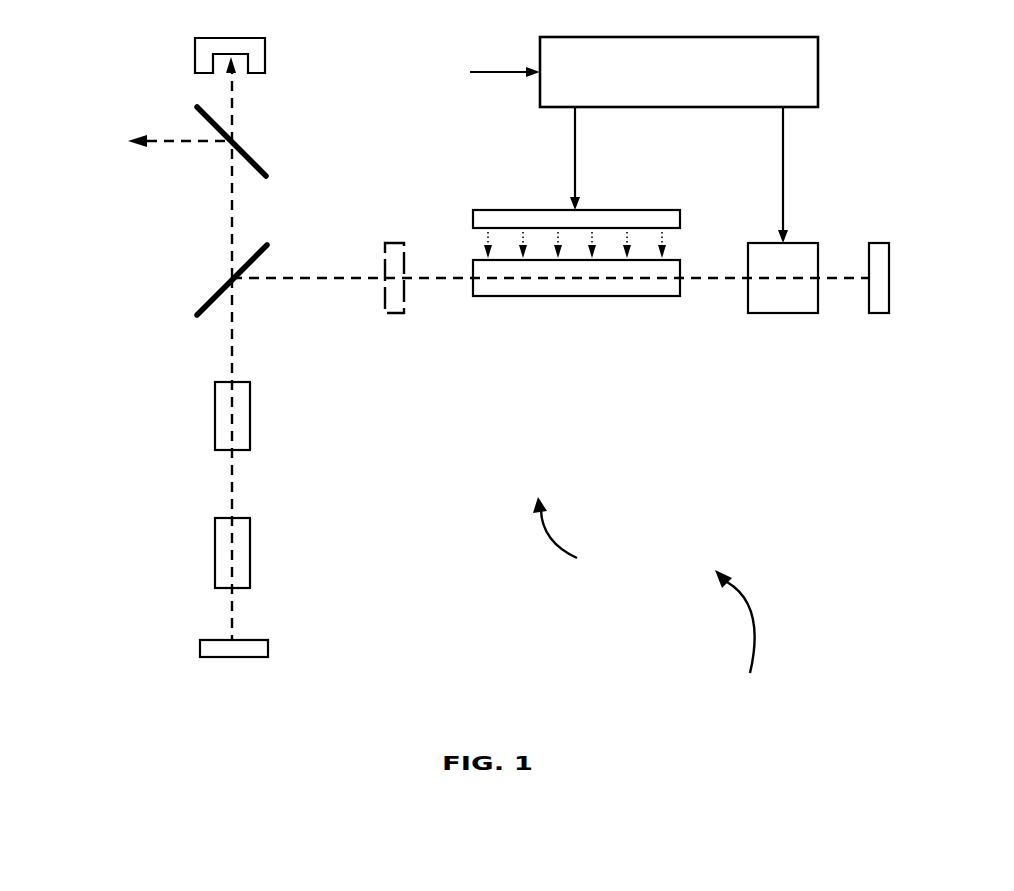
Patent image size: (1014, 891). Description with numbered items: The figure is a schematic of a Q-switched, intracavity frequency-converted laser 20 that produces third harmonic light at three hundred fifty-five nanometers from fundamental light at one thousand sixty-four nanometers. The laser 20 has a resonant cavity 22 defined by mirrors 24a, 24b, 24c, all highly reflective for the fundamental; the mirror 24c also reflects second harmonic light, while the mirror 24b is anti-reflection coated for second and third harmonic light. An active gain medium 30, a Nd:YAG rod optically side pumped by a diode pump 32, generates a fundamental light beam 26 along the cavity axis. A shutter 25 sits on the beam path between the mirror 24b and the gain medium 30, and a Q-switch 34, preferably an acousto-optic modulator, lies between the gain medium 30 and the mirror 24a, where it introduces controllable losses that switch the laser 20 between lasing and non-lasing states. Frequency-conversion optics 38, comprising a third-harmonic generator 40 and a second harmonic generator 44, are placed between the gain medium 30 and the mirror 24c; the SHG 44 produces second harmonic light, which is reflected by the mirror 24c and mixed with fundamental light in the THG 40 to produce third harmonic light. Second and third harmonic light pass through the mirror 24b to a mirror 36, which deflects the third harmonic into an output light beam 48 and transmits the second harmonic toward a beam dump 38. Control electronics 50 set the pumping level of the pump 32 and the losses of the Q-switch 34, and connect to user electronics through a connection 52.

The frequency-converted laser 20 is at (735, 638).
The resonant cavity 22 is at (570, 537).
The mirror 24a is at (880, 243).
The mirror 24b is at (213, 290).
The mirror 24c is at (200, 648).
The shutter 25 is at (393, 242).
The light beam 26 is at (440, 278).
The active gain medium 30 is at (662, 296).
The diode pump 32 is at (517, 208).
The Q-switch 34 is at (766, 243).
The mirror 36 is at (247, 162).
The frequency-conversion optics 38 is at (195, 56).
The third-harmonic generator 40 is at (215, 410).
The second harmonic generator 44 is at (215, 550).
The light beam 48 is at (180, 139).
The control electronics 50 is at (818, 65).
The connection 52 is at (507, 70).